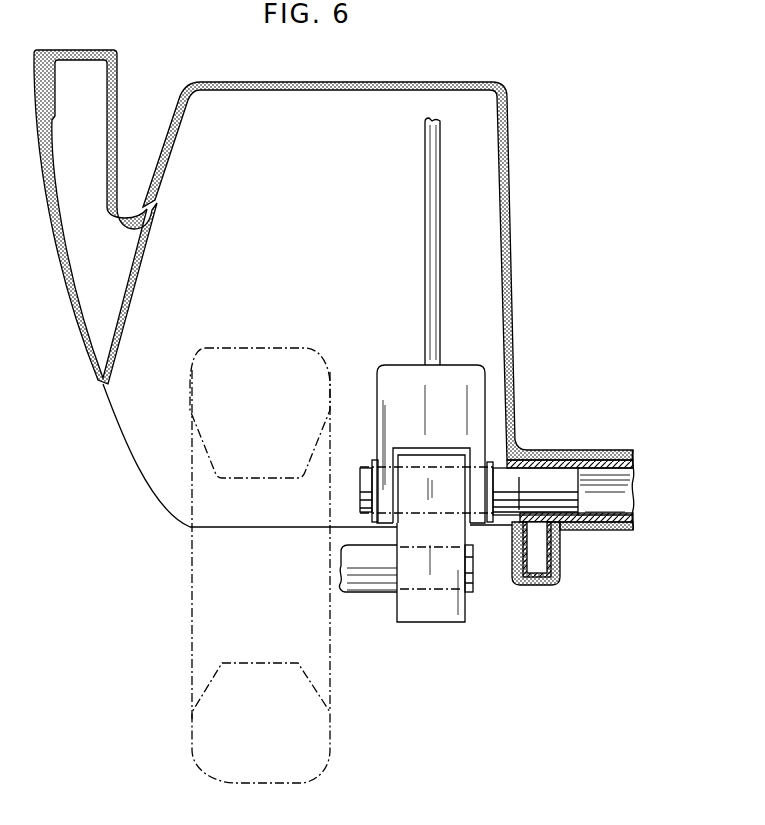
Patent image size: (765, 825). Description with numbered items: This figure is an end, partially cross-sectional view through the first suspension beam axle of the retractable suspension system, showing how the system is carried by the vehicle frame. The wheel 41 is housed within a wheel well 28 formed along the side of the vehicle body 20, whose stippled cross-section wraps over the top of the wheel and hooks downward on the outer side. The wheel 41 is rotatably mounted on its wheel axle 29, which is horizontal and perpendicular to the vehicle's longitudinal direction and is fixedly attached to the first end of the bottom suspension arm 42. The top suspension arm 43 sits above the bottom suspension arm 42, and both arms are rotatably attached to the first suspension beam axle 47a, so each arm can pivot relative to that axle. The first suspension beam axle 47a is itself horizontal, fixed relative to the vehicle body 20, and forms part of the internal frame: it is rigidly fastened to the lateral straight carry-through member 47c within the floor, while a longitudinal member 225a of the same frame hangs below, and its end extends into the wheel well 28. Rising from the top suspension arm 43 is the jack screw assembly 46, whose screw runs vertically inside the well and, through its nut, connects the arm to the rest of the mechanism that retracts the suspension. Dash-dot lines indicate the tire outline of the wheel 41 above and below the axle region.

The vehicle body 20 is at (72, 303).
The wheel well 28 is at (506, 122).
The wheel axle 29 is at (368, 572).
The wheel 41 is at (266, 353).
The bottom suspension arm 42 is at (432, 610).
The top suspension arm 43 is at (403, 375).
The jack screw assembly 46 is at (430, 158).
The first suspension beam axle 47a is at (530, 480).
The lateral straight carry-through member 47c is at (605, 507).
The longitudinal member 225a is at (540, 560).